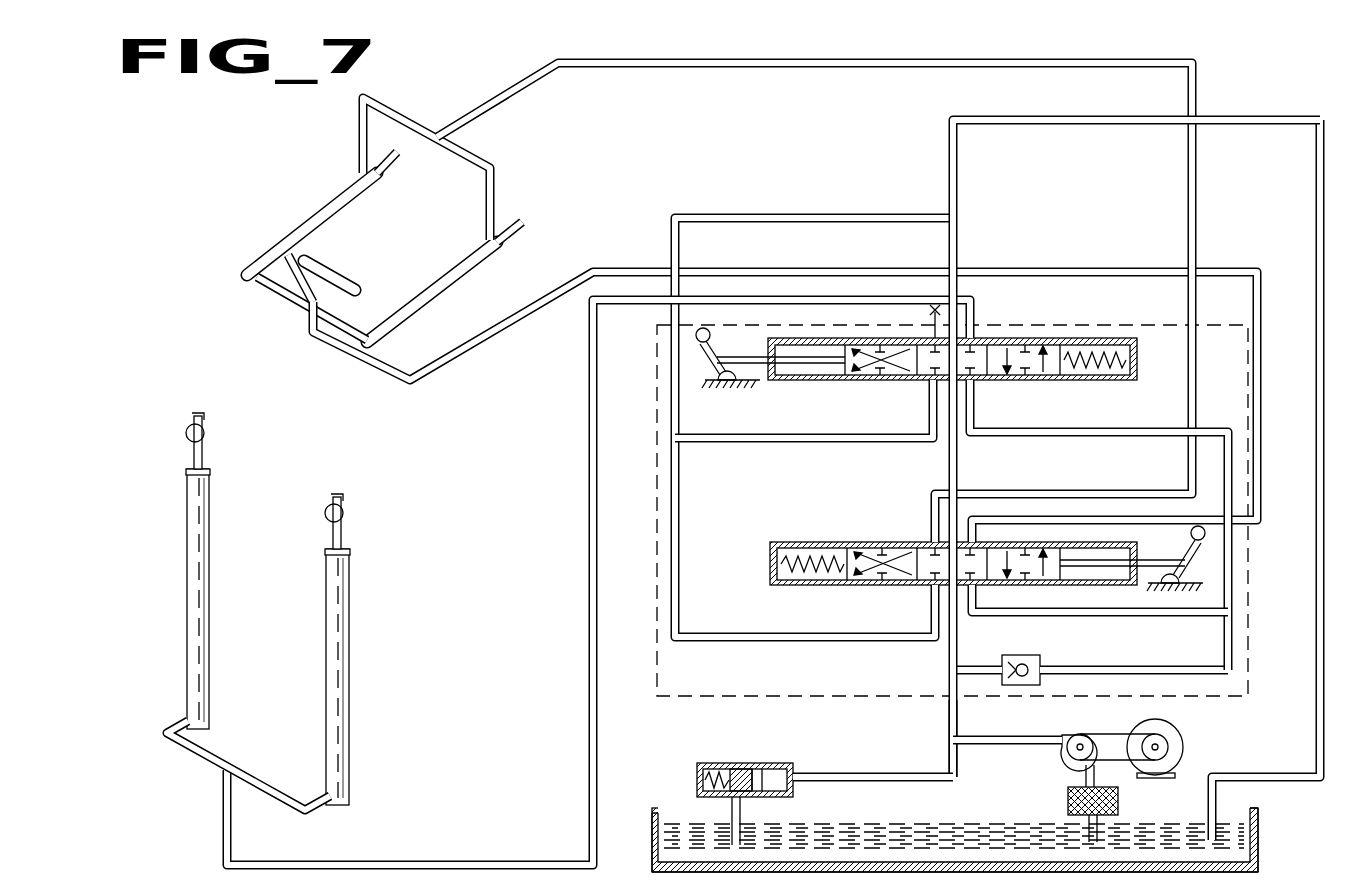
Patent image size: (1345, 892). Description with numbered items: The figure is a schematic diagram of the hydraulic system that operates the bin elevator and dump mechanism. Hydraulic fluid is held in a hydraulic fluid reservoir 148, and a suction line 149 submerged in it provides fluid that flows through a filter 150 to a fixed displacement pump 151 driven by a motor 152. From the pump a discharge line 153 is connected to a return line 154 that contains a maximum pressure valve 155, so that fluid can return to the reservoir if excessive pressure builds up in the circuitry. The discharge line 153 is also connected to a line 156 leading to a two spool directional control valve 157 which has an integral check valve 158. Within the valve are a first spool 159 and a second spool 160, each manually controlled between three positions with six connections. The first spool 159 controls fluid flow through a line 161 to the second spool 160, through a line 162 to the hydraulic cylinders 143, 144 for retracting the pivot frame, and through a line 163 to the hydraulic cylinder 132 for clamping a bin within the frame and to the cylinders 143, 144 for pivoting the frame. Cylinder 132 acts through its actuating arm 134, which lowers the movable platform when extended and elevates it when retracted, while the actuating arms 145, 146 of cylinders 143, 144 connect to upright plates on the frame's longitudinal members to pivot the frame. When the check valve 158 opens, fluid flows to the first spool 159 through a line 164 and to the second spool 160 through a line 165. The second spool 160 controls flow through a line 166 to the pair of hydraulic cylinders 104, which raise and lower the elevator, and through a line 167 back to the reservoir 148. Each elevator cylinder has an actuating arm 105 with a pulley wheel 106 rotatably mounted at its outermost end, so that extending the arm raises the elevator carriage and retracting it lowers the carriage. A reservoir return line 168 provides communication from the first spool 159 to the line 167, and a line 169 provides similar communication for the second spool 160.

The hydraulic cylinders 104 is at (333, 632).
The actuating arm 105 is at (332, 532).
The pulley wheel 106 is at (205, 448).
The hydraulic cylinder 132 is at (332, 276).
The actuating arm 134 is at (293, 257).
The hydraulic cylinder 143 is at (470, 273).
The hydraulic cylinder 144 is at (325, 200).
The actuating arm 145 is at (520, 228).
The actuating arm 146 is at (385, 165).
The hydraulic fluid reservoir 148 is at (1258, 813).
The suction line 149 is at (1108, 832).
The filter 150 is at (1060, 792).
The fixed displacement pump 151 is at (1050, 752).
The motor 152 is at (1183, 726).
The discharge line 153 is at (1004, 733).
The return line 154 is at (902, 773).
The maximum pressure valve 155 is at (705, 763).
The line 156 is at (948, 720).
The two spool directional control valve 157 is at (725, 700).
The check valve 158 is at (1030, 655).
The first spool 159 is at (903, 547).
The second spool 160 is at (906, 345).
The line 161 is at (960, 452).
The line 162 is at (482, 112).
The line 163 is at (440, 364).
The line 164 is at (1173, 615).
The line 165 is at (1090, 430).
The line 166 is at (300, 864).
The line 167 is at (968, 284).
The reservoir return line 168 is at (936, 218).
The line 169 is at (822, 438).